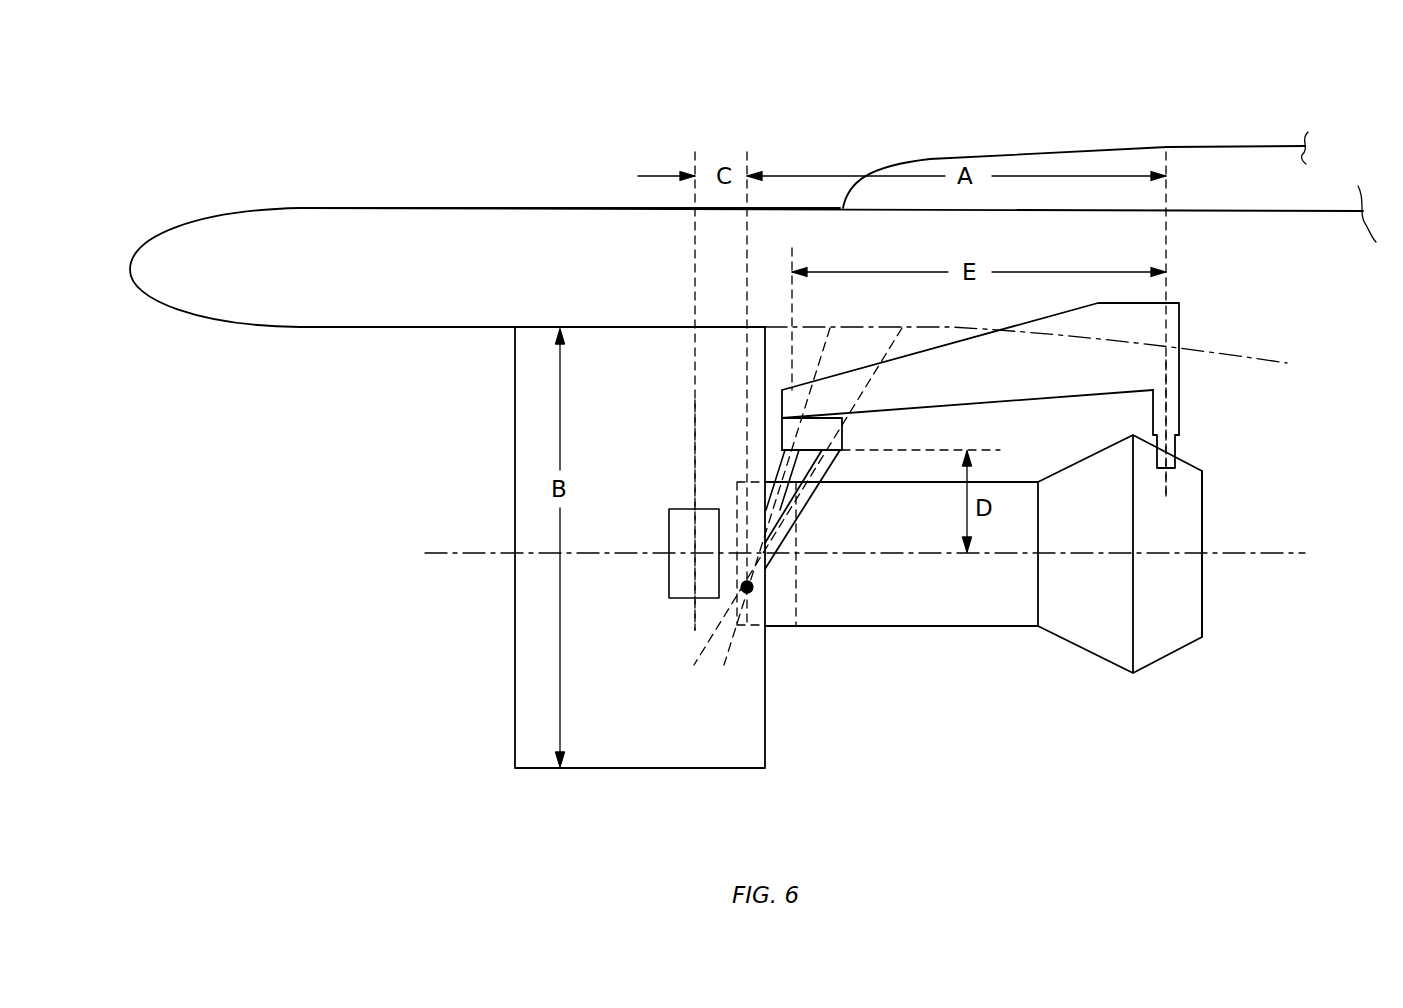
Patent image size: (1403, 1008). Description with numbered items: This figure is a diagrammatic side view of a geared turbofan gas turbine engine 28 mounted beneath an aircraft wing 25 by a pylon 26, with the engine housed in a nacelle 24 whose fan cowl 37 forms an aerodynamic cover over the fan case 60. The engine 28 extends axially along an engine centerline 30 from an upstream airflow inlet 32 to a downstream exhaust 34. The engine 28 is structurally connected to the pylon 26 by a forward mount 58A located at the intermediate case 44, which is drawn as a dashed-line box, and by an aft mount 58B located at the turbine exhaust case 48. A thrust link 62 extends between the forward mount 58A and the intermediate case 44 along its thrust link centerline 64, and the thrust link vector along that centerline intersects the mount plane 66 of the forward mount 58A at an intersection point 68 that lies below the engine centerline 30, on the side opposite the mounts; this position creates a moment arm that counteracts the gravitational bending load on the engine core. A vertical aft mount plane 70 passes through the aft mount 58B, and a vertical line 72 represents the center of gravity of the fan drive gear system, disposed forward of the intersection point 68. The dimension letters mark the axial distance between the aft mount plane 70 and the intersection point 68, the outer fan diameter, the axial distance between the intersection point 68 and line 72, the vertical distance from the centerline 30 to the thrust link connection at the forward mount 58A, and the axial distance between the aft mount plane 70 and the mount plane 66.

The nacelle 24 is at (610, 170).
The wing 25 is at (1187, 23).
The pylon 26 is at (1046, 375).
The gas turbine engine 28 is at (1248, 626).
The engine centerline 30 is at (1243, 553).
The upstream airflow inlet 32 is at (345, 396).
The downstream exhaust 34 is at (1232, 504).
The fan cowl 37 is at (523, 208).
The intermediate case 44 is at (797, 605).
The turbine exhaust case 48 is at (1183, 621).
The forward mount 58A is at (860, 436).
The aft mount 58B is at (1210, 431).
The fan case 60 is at (573, 769).
The thrust link 62 is at (810, 490).
The thrust link centerline 64 is at (823, 465).
The mount plane 66 is at (827, 346).
The intersection point 68 is at (752, 593).
The aft mount plane 70 is at (1167, 368).
The center of gravity line 72 is at (695, 428).